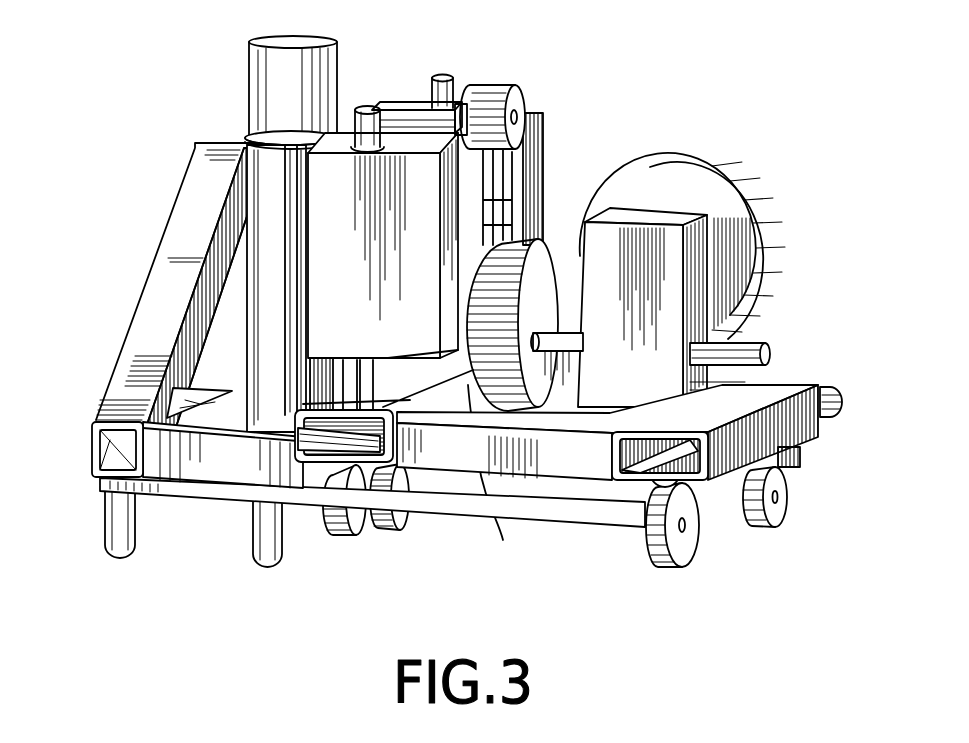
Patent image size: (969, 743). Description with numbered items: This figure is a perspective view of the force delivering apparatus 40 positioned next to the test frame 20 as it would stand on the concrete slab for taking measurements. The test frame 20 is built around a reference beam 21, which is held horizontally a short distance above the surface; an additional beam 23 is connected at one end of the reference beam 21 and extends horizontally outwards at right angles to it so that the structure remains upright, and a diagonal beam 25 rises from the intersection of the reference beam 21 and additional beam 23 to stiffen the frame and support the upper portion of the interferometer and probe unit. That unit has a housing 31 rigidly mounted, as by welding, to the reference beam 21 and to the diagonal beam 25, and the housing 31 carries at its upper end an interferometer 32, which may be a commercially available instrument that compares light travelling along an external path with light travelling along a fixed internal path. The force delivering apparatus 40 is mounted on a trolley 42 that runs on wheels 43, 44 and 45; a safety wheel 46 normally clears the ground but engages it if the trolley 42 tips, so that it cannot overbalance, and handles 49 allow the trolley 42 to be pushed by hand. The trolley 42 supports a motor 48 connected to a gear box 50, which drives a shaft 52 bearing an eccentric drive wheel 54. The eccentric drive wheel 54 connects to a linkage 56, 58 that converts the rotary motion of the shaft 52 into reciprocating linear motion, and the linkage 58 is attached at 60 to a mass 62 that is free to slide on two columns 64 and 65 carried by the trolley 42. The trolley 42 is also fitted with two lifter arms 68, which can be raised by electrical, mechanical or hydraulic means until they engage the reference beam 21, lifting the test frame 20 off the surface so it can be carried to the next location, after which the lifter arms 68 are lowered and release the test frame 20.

The test frame 20 is at (78, 458).
The reference beam 21 is at (177, 388).
The additional beam 23 is at (200, 472).
The diagonal beam 25 is at (125, 348).
The housing 31 is at (277, 150).
The interferometer 32 is at (268, 77).
The force delivering apparatus 40 is at (715, 261).
The trolley 42 is at (790, 382).
The wheel 43 is at (692, 552).
The wheel 44 is at (780, 512).
The wheel 45 is at (392, 530).
The safety wheel 46 is at (340, 537).
The motor 48 is at (747, 186).
The handles 49 is at (842, 401).
The gear box 50 is at (613, 240).
The shaft 52 is at (748, 344).
The eccentric drive wheel 54 is at (482, 327).
The linkage 56 is at (517, 168).
The linkage 58 is at (490, 100).
The attachment point 60 is at (403, 111).
The mass 62 is at (408, 350).
The column 64 is at (355, 122).
The column 65 is at (447, 78).
The lifter arms 68 is at (230, 495).